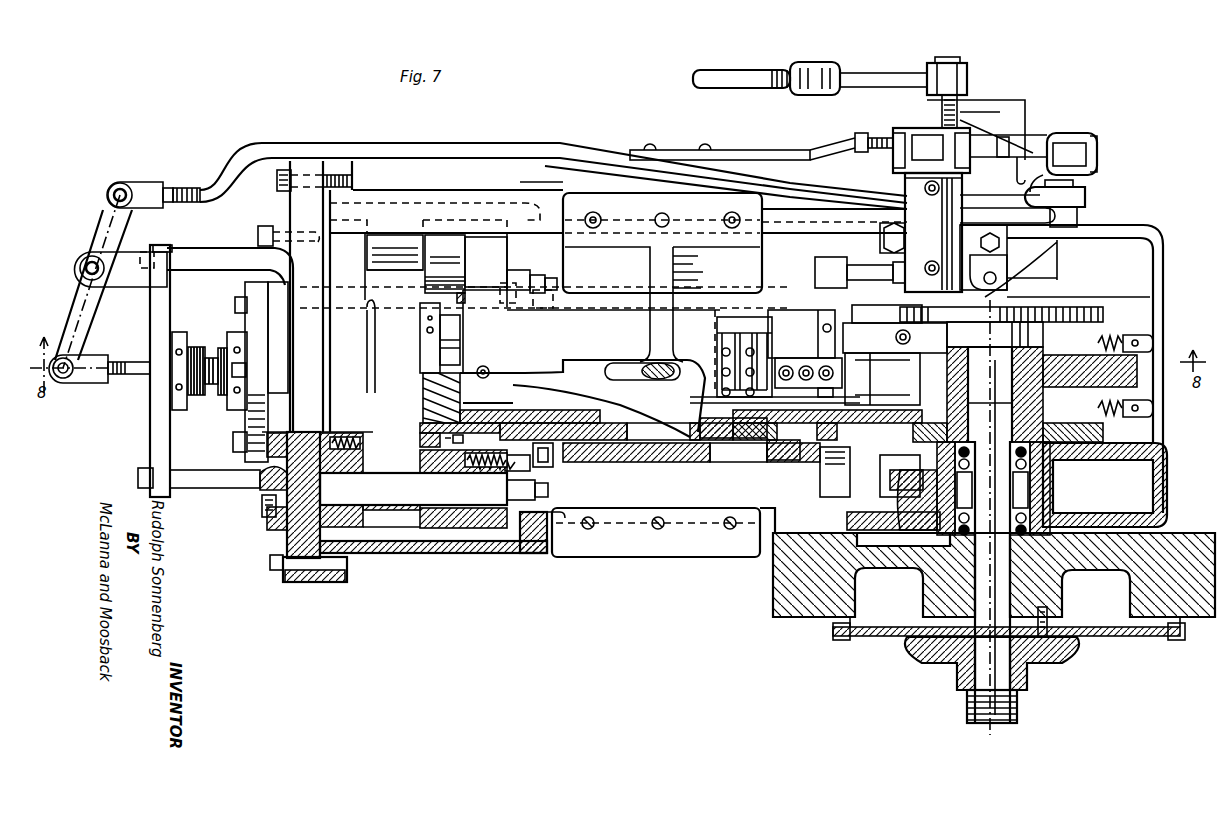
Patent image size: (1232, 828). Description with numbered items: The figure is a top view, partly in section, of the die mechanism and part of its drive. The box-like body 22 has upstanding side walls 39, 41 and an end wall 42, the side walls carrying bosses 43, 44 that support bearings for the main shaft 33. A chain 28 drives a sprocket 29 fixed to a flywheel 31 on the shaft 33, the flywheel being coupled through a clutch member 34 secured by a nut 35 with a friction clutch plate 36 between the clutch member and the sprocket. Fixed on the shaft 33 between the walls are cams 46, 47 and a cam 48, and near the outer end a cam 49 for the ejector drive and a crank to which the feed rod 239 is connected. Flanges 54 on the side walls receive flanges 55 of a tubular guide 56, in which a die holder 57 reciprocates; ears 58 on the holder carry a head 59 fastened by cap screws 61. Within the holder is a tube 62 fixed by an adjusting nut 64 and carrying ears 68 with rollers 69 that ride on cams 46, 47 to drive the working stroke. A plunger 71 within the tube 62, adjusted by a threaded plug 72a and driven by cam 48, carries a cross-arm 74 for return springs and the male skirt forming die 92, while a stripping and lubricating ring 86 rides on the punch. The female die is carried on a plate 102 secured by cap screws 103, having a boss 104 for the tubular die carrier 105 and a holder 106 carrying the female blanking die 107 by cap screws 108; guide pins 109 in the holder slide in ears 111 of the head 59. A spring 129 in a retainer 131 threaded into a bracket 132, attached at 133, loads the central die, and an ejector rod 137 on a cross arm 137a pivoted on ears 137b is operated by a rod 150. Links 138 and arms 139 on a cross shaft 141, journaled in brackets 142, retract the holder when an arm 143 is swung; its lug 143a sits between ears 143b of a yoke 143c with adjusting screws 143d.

The body member 22 is at (514, 560).
The chain 28 is at (833, 632).
The sprocket 29 is at (1103, 637).
The flywheel 31 is at (1187, 637).
The shaft 33 is at (990, 517).
The clutch member 34 is at (1082, 655).
The nut 35 is at (970, 705).
The clutch plate of friction material 36 is at (908, 650).
The side wall 39 is at (770, 510).
The side wall 41 is at (790, 232).
The end wall 42 is at (1162, 262).
The boss 43 is at (1050, 487).
The boss 44 is at (1045, 250).
The cam 46 is at (1105, 432).
The cam 47 is at (1100, 315).
The cam 48 is at (1100, 362).
The cam 49 is at (1090, 185).
The flange 54 is at (633, 545).
The flange 55 is at (641, 272).
The tubular guide 56 is at (588, 328).
The die holder 57 is at (662, 423).
The ears 58 is at (522, 275).
The head 59 is at (437, 270).
The cap screws 61 is at (548, 462).
The tube 62 is at (985, 105).
The adjusting nut 64 is at (828, 345).
The ears 68 is at (520, 485).
The rollers 69 is at (812, 492).
The plunger 71 is at (570, 438).
The screw threaded plug 72a is at (722, 440).
The cross-arm 74 is at (650, 370).
The stripping and lubricating ring 86 is at (425, 307).
The male skirt forming die 92 is at (433, 410).
The plate 102 is at (288, 535).
The cap screws 103 is at (285, 170).
The boss 104 is at (260, 488).
The tubular die carrier 105 is at (245, 315).
The holder 106 is at (357, 513).
The female blanking die 107 is at (372, 310).
The cap screws 108 is at (355, 453).
The guide pins 109 is at (480, 490).
The ears 111 is at (443, 250).
The spring 129 is at (215, 375).
The spring retainer 131 is at (197, 400).
The bracket 132 is at (152, 436).
The bracket attachment 133 is at (258, 237).
The ejector rod 137 is at (137, 372).
The cross arm 137a is at (73, 310).
The ears 137b is at (90, 258).
The links 138 is at (815, 266).
The arms 139 is at (905, 535).
The cross shaft 141 is at (1040, 278).
The brackets 142 is at (915, 245).
The arm 143 is at (1050, 138).
The lug 143a is at (940, 140).
The ears 143b is at (947, 110).
The yoke 143c is at (900, 178).
The screws 143d is at (857, 138).
The rod 150 is at (405, 150).
The rod 239 is at (740, 83).